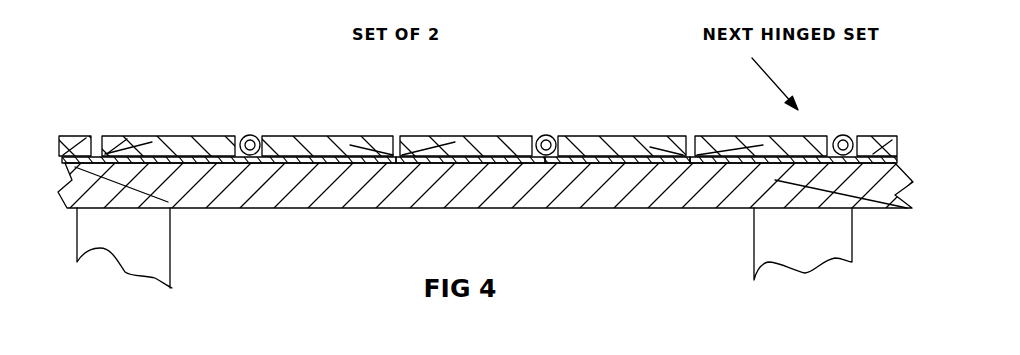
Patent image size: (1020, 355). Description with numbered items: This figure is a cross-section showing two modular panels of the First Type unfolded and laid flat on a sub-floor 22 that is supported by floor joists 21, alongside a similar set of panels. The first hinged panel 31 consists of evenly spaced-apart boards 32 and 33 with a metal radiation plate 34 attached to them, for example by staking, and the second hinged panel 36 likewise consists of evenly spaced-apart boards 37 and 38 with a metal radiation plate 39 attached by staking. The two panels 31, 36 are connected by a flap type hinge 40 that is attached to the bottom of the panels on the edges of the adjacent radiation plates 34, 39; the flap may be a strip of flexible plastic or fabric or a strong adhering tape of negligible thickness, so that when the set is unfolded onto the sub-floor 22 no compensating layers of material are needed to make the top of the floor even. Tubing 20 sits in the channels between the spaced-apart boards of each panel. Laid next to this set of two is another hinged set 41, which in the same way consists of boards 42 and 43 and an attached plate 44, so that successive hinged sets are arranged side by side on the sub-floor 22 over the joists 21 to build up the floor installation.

The tubing 20 is at (249, 134).
The floor joists 21 is at (173, 262).
The sub-floor 22 is at (352, 208).
The hinged panel 31 is at (226, 102).
The board 32 is at (114, 135).
The board 33 is at (303, 135).
The metal radiation plate 34 is at (197, 165).
The hinged panel 36 is at (543, 107).
The board 37 is at (443, 135).
The board 38 is at (601, 135).
The metal radiation plate 39 is at (520, 165).
The flap type hinge 40 is at (425, 165).
The hinged set of panels 41 is at (802, 105).
The board 42 is at (728, 135).
The board 43 is at (878, 135).
The radiation plate 44 is at (745, 165).